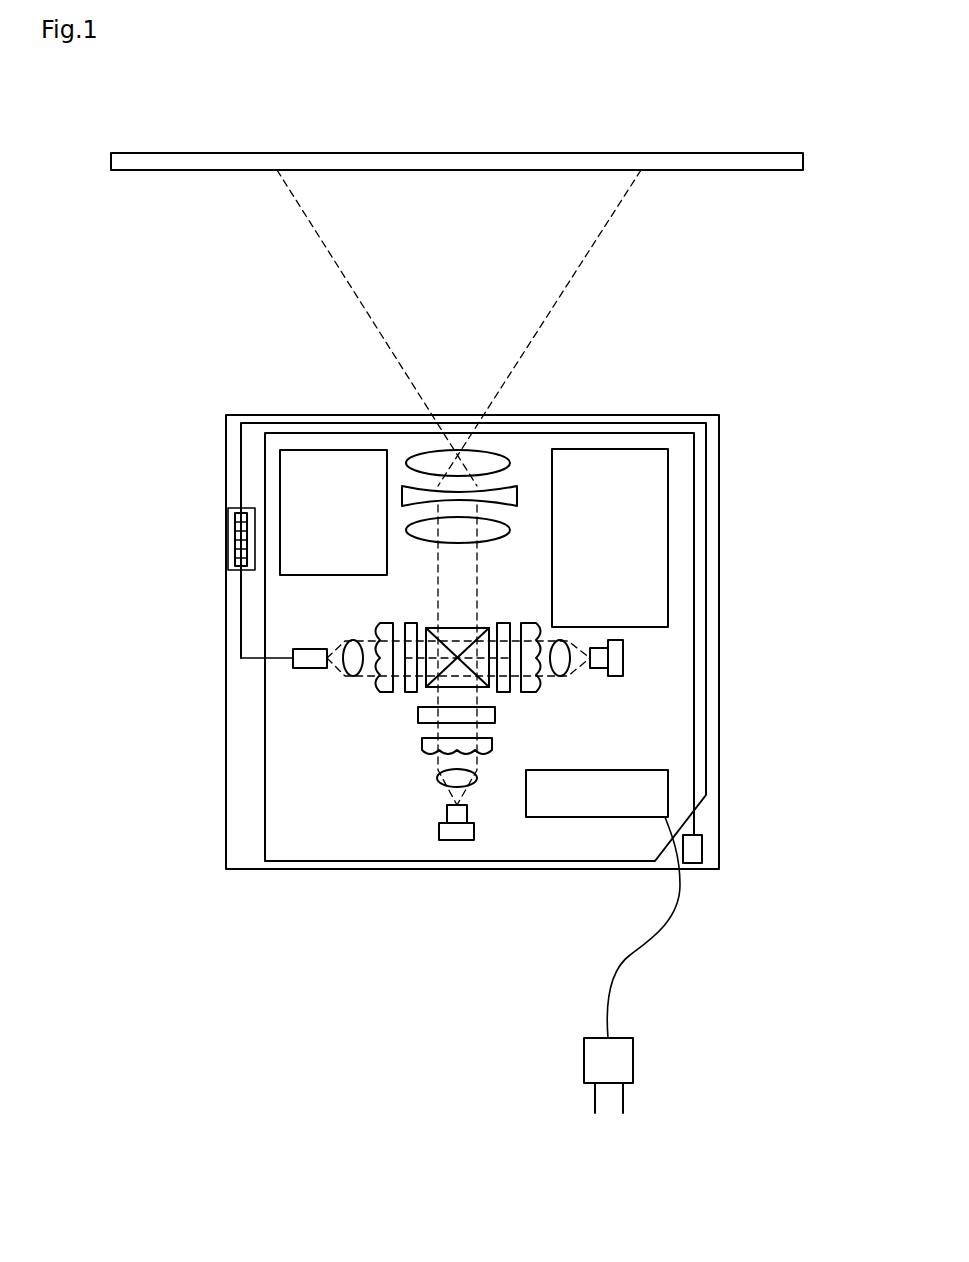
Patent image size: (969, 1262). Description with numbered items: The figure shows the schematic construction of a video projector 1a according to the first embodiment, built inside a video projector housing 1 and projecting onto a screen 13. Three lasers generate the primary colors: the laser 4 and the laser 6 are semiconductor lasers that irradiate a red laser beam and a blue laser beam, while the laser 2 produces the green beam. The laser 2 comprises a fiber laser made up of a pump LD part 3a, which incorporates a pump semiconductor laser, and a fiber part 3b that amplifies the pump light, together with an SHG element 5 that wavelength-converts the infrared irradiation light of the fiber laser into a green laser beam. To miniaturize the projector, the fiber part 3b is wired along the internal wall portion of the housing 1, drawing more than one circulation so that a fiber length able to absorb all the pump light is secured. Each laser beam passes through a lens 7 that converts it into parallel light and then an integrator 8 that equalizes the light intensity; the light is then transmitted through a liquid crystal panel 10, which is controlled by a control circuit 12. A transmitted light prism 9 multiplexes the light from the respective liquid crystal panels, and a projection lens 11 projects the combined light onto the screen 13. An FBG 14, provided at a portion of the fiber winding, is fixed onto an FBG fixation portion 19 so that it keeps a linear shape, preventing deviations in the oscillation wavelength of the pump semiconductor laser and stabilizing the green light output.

The video projector housing 1 is at (226, 832).
The video projector 1a is at (210, 935).
The laser 2 is at (478, 1012).
The pump LD part 3a is at (690, 855).
The fiber part 3b is at (706, 732).
The laser 4 is at (439, 832).
The SHG element 5 is at (303, 668).
The laser 6 is at (623, 655).
The lens 7 is at (348, 642).
The integrator 8 is at (385, 623).
The transmitted light prism 9 is at (457, 635).
The liquid crystal panel 10 is at (499, 623).
The projection lens 11 is at (515, 488).
The control circuit 12 is at (305, 458).
The screen 13 is at (768, 160).
The FBG 14 is at (237, 530).
The FBG fixation portion 19 is at (228, 548).